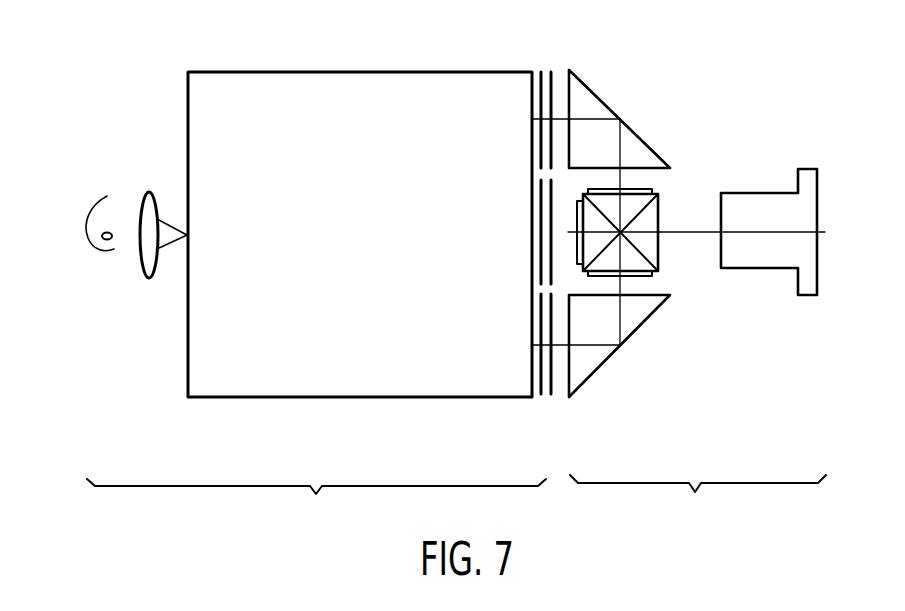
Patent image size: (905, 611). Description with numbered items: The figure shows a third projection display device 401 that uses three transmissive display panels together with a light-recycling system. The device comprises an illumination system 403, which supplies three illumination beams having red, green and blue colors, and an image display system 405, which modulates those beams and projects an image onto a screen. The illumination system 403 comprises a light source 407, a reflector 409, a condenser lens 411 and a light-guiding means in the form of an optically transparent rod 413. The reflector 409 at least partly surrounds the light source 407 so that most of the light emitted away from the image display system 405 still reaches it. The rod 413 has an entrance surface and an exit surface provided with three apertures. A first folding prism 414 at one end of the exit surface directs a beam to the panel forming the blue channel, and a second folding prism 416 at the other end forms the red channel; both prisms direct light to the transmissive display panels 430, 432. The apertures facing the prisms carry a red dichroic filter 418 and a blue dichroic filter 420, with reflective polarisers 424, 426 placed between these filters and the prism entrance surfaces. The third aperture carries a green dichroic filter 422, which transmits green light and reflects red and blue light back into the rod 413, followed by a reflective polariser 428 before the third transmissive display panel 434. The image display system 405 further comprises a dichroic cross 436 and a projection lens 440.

The third projection display device 401 is at (250, 518).
The illumination system 403 is at (316, 500).
The image display system 405 is at (698, 497).
The light source 407 is at (107, 240).
The reflector 409 is at (103, 211).
The condenser lens 411 is at (151, 279).
The optically transparent rod 413 is at (247, 400).
The first folding prism 414 is at (600, 372).
The second folding prism 416 is at (600, 93).
The red dichroic filter 418 is at (539, 68).
The blue dichroic filter 420 is at (540, 397).
The green dichroic filter 422 is at (540, 236).
The reflective polariser 424 is at (551, 68).
The reflective polariser 426 is at (551, 397).
The reflective polariser 428 is at (550, 268).
The transmissive display panel 430 is at (653, 190).
The transmissive display panel 432 is at (653, 274).
The third transmissive display panel 434 is at (577, 206).
The dichroic cross 436 is at (659, 212).
The projection lens 440 is at (768, 192).